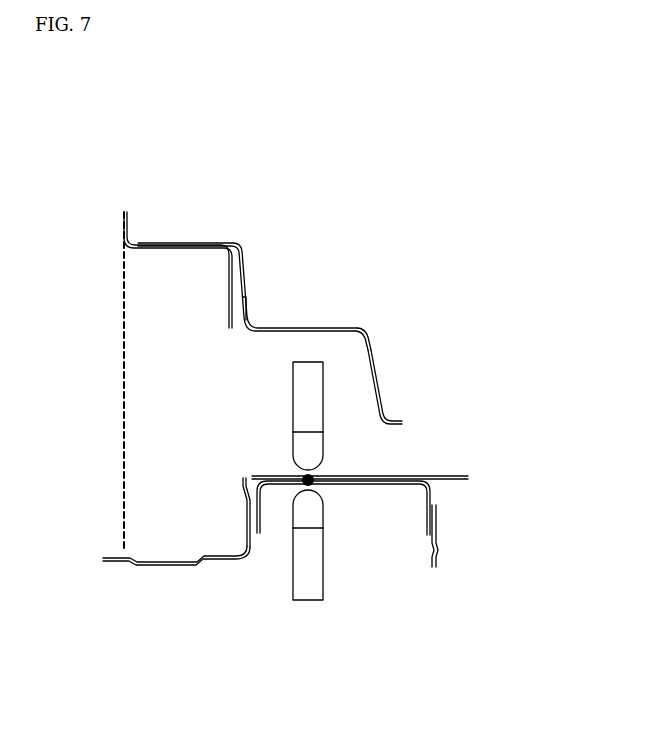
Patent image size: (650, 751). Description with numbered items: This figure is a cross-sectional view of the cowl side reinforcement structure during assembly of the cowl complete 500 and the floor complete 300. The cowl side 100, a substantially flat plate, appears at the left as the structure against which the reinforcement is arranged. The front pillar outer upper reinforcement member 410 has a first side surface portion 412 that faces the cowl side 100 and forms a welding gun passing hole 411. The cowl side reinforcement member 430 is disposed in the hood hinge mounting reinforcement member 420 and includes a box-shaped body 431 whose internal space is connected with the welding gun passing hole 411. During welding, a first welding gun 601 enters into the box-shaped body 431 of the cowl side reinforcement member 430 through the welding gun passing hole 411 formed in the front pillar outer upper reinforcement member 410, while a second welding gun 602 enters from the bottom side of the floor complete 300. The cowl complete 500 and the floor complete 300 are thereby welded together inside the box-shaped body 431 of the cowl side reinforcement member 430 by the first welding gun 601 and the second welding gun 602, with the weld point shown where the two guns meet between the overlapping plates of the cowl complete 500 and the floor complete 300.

The cowl side 100 is at (122, 366).
The floor complete 300 is at (436, 497).
The front pillar outer upper reinforcement member 410 is at (168, 567).
The welding gun passing hole 411 is at (245, 482).
The first side surface portion 412 is at (232, 288).
The hood hinge mounting reinforcement member 420 is at (241, 256).
The cowl side reinforcement member 430 is at (380, 362).
The box-shaped body 431 is at (360, 327).
The cowl complete 500 is at (456, 467).
The first welding gun 601 is at (315, 389).
The second welding gun 602 is at (317, 575).